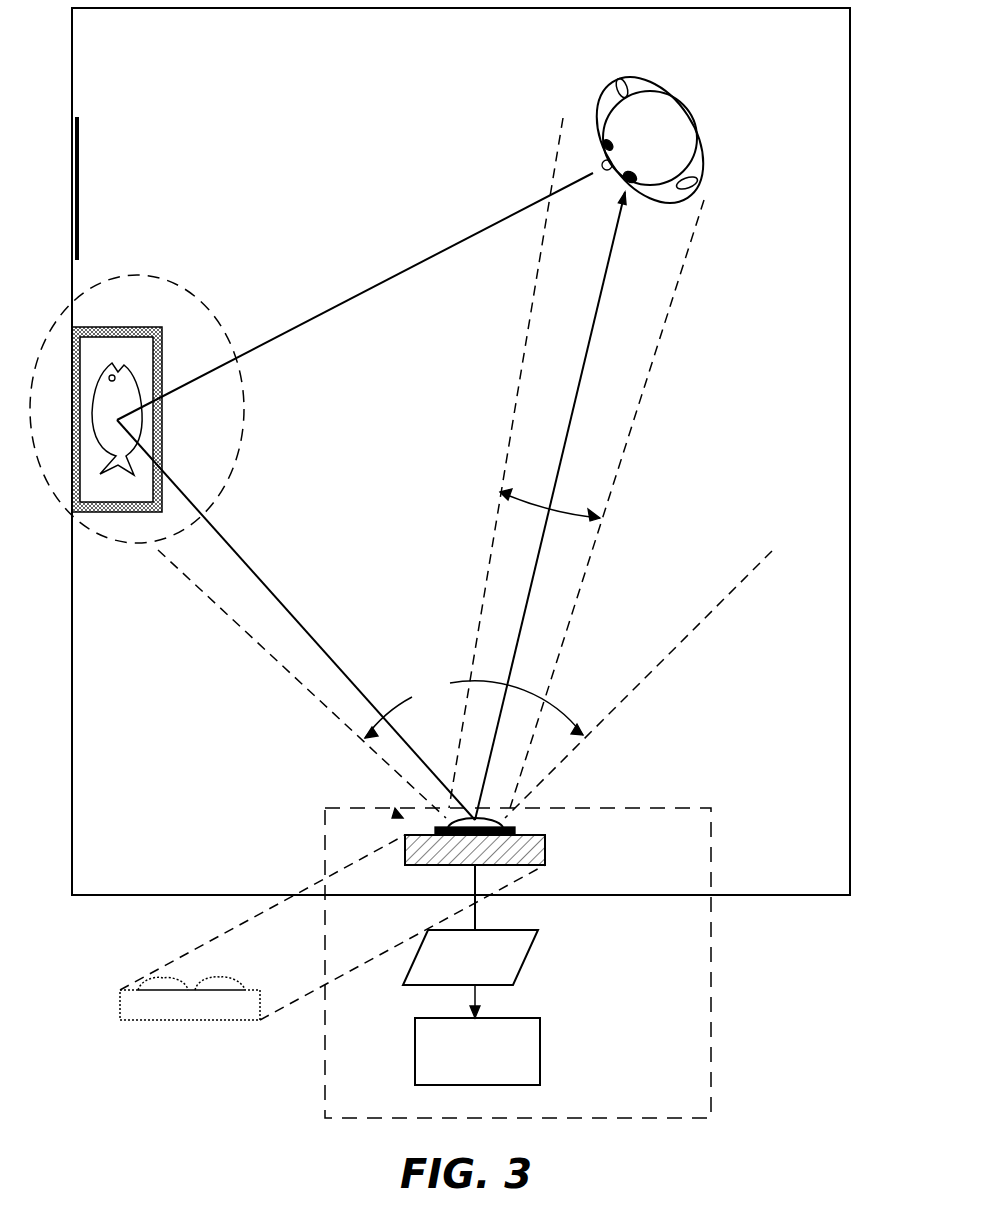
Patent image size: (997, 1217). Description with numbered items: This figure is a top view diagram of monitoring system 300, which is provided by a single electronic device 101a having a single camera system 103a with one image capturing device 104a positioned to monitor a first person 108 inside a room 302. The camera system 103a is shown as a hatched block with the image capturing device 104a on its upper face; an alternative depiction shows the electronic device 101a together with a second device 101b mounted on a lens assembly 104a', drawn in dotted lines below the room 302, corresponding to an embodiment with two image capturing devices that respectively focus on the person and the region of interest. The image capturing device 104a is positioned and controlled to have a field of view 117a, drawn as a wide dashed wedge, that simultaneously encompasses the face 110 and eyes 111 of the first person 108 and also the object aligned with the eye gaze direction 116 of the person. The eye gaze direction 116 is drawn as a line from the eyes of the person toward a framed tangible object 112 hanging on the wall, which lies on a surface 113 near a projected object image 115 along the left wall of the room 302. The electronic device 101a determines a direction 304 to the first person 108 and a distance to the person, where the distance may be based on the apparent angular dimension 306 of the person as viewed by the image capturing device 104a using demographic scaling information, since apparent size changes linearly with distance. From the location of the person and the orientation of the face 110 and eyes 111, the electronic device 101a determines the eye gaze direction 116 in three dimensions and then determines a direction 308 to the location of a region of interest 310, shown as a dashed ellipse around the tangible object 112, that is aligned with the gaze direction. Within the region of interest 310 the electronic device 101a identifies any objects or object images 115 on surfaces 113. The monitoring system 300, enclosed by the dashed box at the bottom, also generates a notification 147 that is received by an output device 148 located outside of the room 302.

The room 302 is at (118, 59).
The first person 108 is at (668, 115).
The face 110 is at (597, 157).
The eyes 111 is at (632, 198).
The object image 115 is at (80, 213).
The surfaces 113 is at (78, 268).
The tangible object 112 is at (130, 470).
The region of interest 310 is at (205, 282).
The eye gaze direction 116 is at (368, 292).
The direction 308 is at (284, 605).
The direction 304 is at (583, 375).
The apparent angular dimension 306 is at (600, 515).
The field of view 117a is at (465, 684).
The single camera system 103a is at (398, 816).
The image capturing device 104a is at (532, 809).
The electronic device 101a is at (547, 850).
The second camera 101b is at (210, 977).
The lens assembly 104a' is at (285, 927).
The notification 147 is at (494, 981).
The output device 148 is at (523, 1074).
The monitoring system 300 is at (668, 1086).